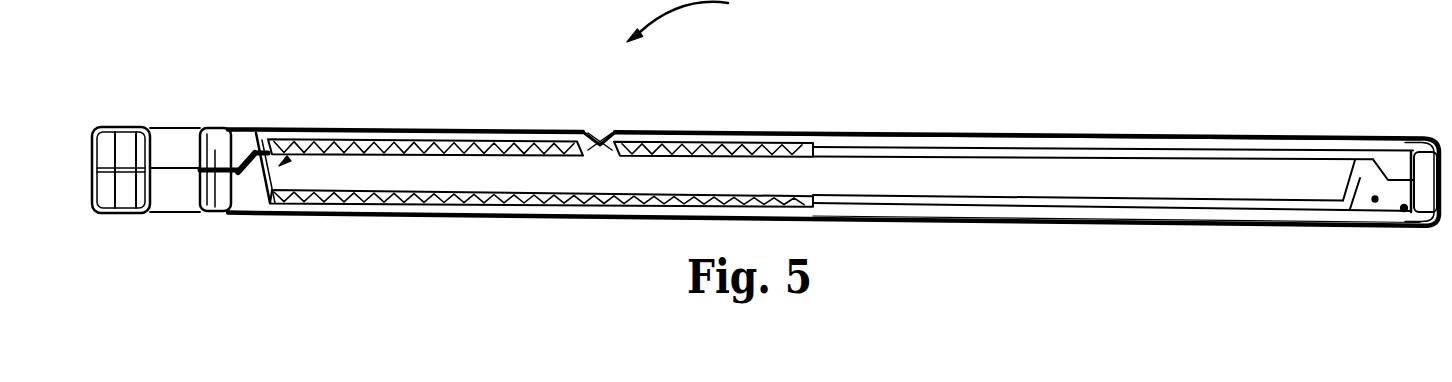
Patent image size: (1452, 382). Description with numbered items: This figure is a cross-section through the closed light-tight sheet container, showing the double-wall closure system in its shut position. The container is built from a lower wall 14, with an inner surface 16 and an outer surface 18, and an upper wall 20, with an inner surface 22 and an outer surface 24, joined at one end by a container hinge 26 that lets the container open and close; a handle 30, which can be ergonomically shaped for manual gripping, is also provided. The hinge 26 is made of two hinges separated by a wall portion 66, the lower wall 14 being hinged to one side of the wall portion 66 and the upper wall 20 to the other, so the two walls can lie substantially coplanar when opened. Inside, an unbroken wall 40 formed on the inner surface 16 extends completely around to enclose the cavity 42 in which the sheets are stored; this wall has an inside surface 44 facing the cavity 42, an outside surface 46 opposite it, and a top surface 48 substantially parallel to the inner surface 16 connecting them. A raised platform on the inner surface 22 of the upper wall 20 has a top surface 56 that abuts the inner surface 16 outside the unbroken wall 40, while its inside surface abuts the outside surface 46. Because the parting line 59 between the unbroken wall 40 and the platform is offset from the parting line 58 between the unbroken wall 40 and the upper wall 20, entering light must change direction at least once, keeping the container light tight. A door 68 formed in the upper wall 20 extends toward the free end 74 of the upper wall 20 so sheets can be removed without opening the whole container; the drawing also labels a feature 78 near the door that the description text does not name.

The lower wall 14 is at (1141, 246).
The inner surface 16 is at (978, 195).
The outer surface 18 is at (1212, 228).
The upper wall 20 is at (1154, 115).
The inner surface 22 is at (862, 160).
The outer surface 24 is at (913, 131).
The container hinge 26 is at (1402, 210).
The handle 30 is at (150, 188).
The unbroken wall 40 is at (287, 157).
The cavity 42 is at (1027, 178).
The inside surface 44 is at (272, 179).
The outside surface 46 is at (238, 162).
The top surface 48 is at (262, 150).
The top surface 56 is at (128, 208).
The parting line 58 is at (215, 208).
The parting line 59 is at (249, 150).
The wall portion 66 is at (1441, 160).
The door 68 is at (386, 108).
The free end 74 is at (95, 150).
The notch 78 is at (598, 154).